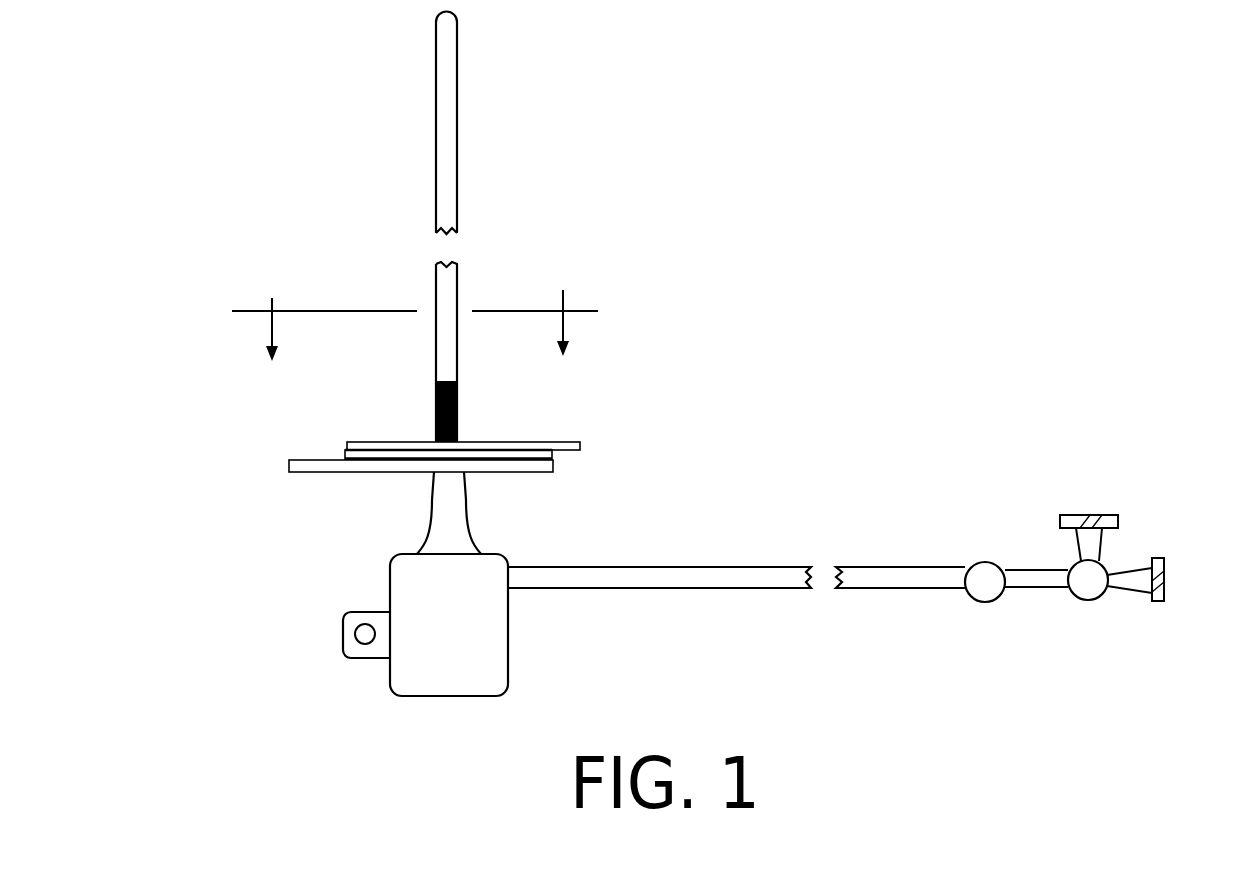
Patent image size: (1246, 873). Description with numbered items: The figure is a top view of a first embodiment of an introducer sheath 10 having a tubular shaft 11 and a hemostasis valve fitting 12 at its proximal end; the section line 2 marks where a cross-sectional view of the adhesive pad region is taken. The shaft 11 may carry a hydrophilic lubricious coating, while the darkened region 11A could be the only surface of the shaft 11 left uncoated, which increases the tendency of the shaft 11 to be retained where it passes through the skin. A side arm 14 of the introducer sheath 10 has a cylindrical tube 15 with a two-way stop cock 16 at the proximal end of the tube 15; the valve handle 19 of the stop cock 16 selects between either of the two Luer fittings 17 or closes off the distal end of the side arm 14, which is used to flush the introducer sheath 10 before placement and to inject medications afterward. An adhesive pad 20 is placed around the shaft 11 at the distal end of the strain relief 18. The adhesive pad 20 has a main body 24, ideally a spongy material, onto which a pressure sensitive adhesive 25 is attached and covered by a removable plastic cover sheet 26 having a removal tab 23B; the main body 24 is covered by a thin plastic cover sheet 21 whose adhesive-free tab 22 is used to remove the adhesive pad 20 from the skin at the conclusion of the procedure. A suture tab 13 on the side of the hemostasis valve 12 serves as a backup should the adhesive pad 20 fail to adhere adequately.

The section line 2- 2 is at (416, 329).
The introducer sheath 10 is at (720, 200).
The tubular shaft 11 is at (436, 195).
The darkened region 11A is at (434, 400).
The hemostasis valve fitting 12 is at (508, 652).
The suture tab 13 is at (343, 632).
The side arm 14 is at (1073, 543).
The cylindrical tube 15 is at (893, 567).
The two-way stop cock 16 is at (1088, 590).
The Luer fittings 17 is at (1165, 575).
The strain relief 18 is at (470, 515).
The valve handle 19 is at (1044, 568).
The adhesive pad 20 is at (437, 445).
The plastic cover sheet 21 is at (397, 472).
The tab 22 is at (303, 472).
The removal tab 23B is at (562, 446).
The main body 24 is at (553, 454).
The pressure sensitive adhesive 25 is at (345, 452).
The removable plastic cover sheet 26 is at (474, 442).